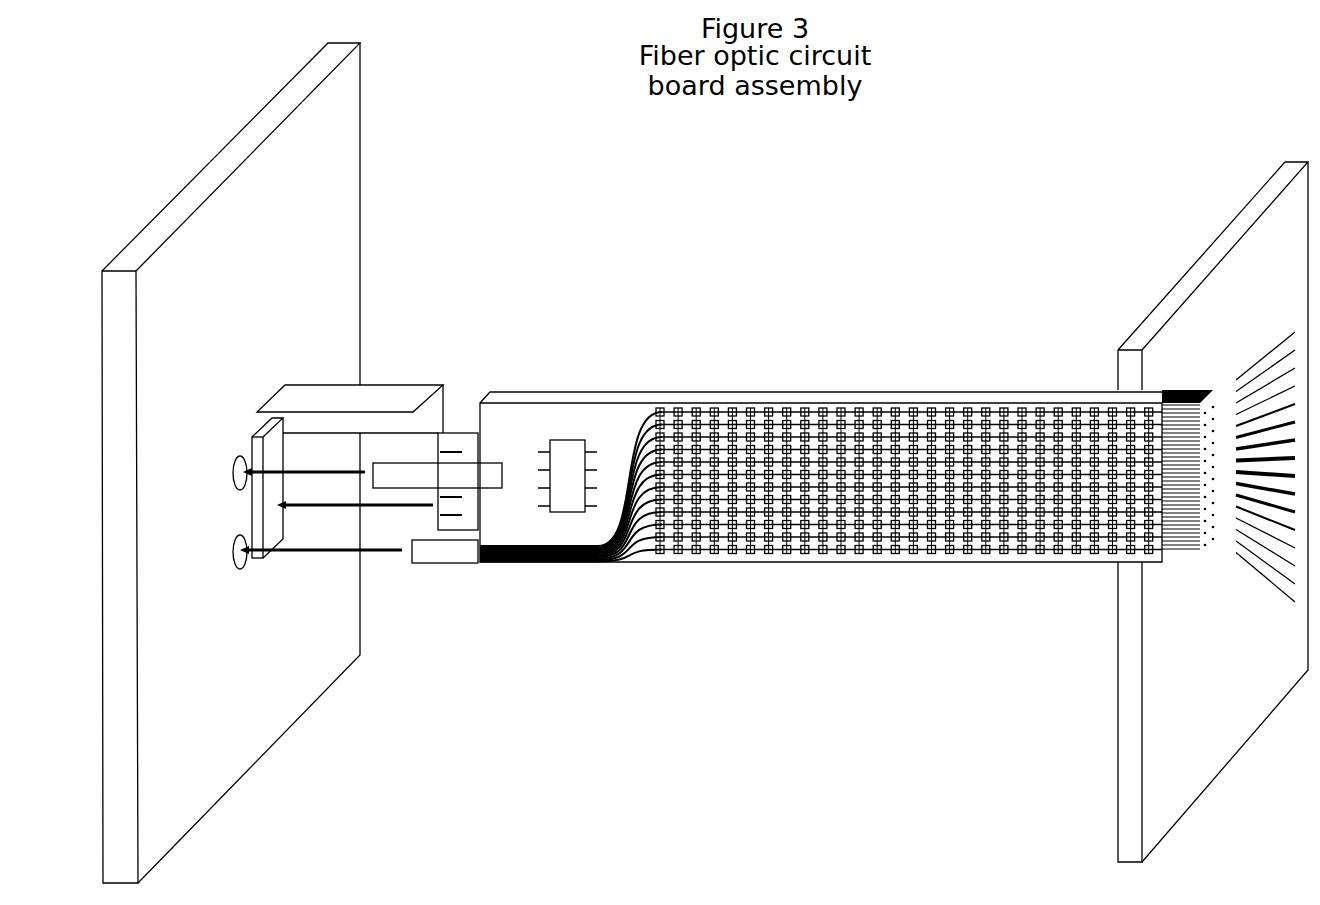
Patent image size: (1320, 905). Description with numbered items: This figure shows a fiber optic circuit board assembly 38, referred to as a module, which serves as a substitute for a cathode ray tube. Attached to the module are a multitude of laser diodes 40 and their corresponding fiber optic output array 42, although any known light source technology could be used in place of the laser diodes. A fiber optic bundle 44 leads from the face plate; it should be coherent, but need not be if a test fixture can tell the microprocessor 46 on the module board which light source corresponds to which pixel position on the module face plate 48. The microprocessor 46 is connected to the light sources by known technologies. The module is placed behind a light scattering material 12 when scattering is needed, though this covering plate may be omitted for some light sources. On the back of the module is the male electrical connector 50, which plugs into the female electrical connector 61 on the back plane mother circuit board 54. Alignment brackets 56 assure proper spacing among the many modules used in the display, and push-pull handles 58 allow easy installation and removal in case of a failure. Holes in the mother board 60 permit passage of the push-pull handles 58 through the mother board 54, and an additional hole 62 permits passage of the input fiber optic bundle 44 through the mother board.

The light scattering material 12 is at (1247, 278).
The fiber optic circuit board assembly 38 is at (727, 567).
The laser diodes 40 is at (920, 520).
The fiber optic output array 42 is at (1170, 390).
The fiber optic bundle 44 is at (500, 565).
The microprocessor 46 is at (568, 468).
The module face plate 48 is at (1212, 538).
The male electrical connector 50 is at (452, 440).
The back plane mother circuit board 54 is at (313, 235).
The alignment brackets 56 is at (397, 397).
The push-pull handles 58 is at (473, 470).
The holes in the mother board 60 is at (233, 492).
The female electrical connector 61 is at (274, 513).
The additional hole 62 is at (238, 567).